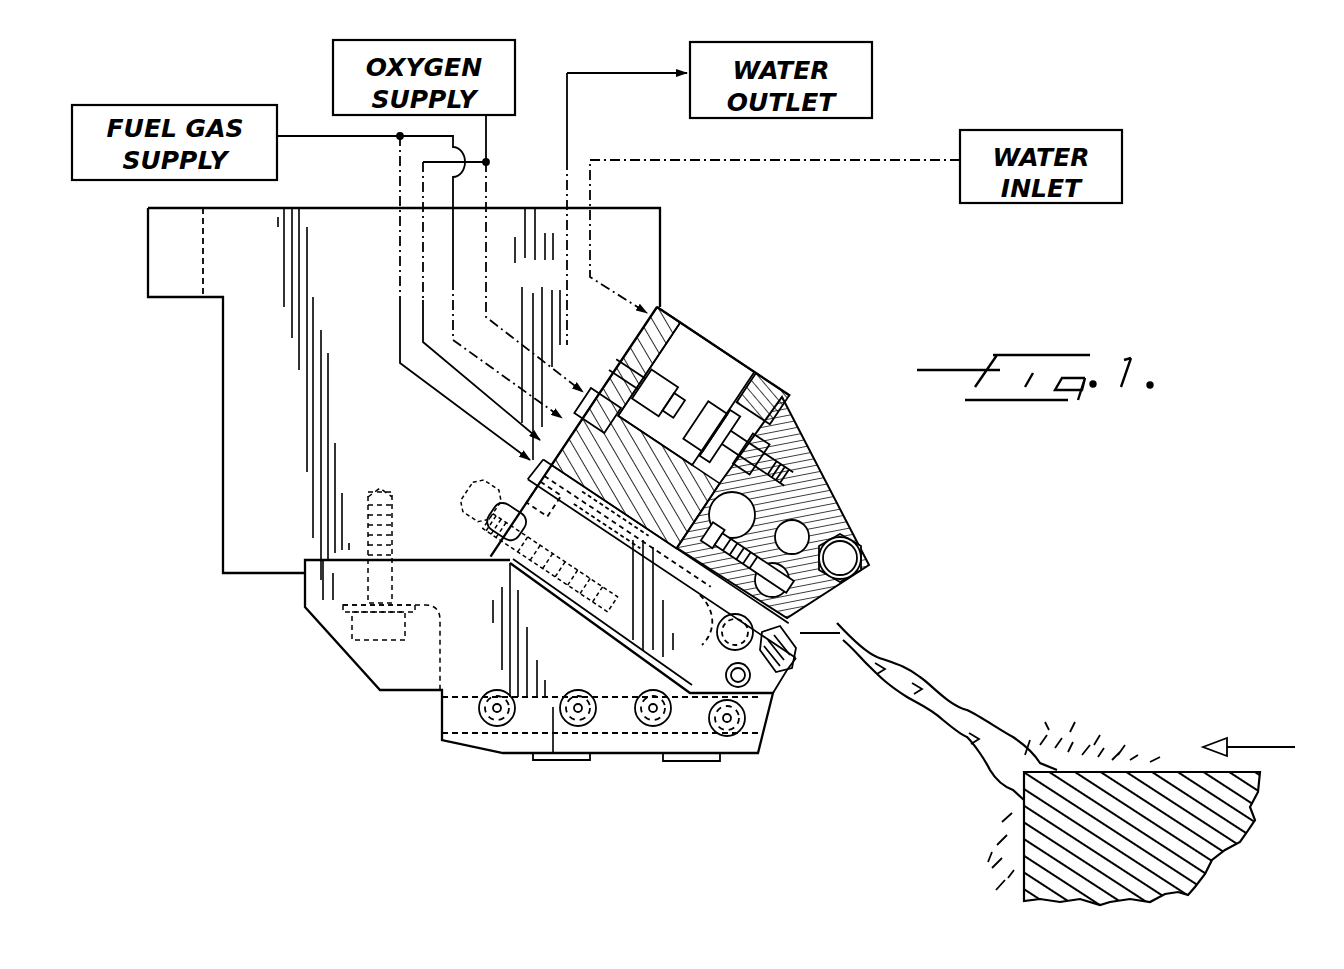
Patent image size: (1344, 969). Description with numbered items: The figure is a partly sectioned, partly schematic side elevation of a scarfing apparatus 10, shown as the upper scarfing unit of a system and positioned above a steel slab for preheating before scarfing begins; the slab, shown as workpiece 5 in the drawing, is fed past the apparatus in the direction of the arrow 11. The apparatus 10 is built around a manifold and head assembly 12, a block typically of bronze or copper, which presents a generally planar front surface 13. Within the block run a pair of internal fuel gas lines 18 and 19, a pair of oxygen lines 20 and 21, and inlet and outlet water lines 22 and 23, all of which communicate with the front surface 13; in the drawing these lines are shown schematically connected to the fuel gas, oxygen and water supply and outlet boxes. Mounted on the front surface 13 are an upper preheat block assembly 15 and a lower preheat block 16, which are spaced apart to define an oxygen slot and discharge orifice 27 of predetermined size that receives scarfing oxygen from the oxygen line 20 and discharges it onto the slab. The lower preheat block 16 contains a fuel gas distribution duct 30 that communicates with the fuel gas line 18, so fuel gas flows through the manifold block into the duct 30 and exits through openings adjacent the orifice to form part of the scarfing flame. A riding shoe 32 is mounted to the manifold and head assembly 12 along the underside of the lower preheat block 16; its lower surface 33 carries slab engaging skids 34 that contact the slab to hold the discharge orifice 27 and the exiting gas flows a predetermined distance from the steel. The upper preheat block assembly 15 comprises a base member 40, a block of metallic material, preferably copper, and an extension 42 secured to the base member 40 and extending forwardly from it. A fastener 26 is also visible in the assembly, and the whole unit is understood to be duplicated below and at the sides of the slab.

The workpiece 5 is at (1172, 875).
The scarfing apparatus 10 is at (780, 262).
The arrow 11 is at (1253, 747).
The manifold and head assembly 12 is at (664, 222).
The front surface 13 is at (504, 543).
The upper preheat block assembly 15 is at (783, 379).
The lower preheat block 16 is at (783, 683).
The fuel gas line 18 is at (400, 241).
The fuel gas line 19 is at (452, 260).
The oxygen line 20 is at (460, 230).
The oxygen line 21 is at (487, 316).
The inlet water line 22 is at (822, 163).
The outlet water line 23 is at (655, 75).
The bolt 26 is at (594, 492).
The discharge orifice 27 is at (800, 647).
The fuel gas distribution duct 30 is at (745, 623).
The riding shoe 32 is at (458, 675).
The lower surface 33 is at (520, 756).
The slab engaging skids 34 is at (687, 758).
The base member 40 is at (721, 329).
The extension 42 is at (848, 507).